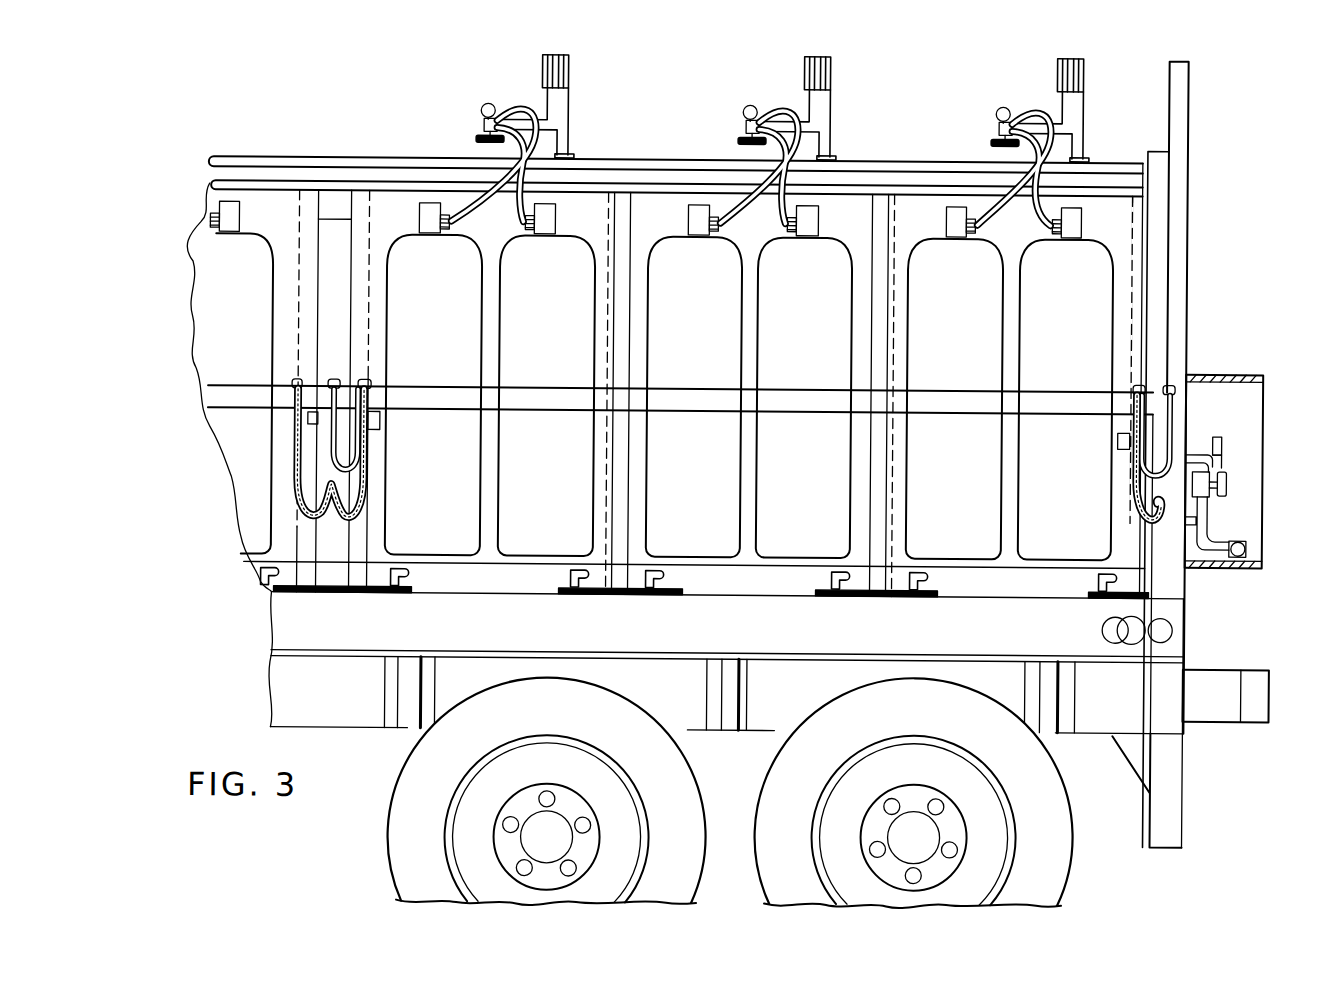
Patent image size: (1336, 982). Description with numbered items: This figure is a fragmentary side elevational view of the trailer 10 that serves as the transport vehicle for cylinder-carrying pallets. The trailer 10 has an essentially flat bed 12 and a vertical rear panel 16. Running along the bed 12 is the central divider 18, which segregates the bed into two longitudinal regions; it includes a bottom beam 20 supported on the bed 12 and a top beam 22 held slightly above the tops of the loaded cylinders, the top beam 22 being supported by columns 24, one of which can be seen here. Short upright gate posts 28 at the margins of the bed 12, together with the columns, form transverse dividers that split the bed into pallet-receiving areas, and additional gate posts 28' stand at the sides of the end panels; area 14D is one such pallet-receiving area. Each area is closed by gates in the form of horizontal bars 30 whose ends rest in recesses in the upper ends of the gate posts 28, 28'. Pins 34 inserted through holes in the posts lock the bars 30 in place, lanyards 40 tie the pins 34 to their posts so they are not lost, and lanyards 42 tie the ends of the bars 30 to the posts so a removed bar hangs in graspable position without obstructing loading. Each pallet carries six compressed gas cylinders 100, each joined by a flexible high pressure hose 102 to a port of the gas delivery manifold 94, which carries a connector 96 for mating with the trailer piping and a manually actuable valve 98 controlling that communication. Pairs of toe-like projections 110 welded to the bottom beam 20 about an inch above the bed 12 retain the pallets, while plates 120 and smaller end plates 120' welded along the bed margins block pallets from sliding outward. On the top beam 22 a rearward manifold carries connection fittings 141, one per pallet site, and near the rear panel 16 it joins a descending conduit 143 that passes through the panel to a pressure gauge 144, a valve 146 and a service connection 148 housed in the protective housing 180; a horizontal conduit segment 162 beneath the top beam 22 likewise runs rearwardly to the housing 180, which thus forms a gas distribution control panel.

The trailer 10 is at (1213, 133).
The bed 12 is at (280, 611).
The cylinder compartment 14D is at (926, 171).
The vertical rear panel 16 is at (1188, 218).
The central divider 18 is at (375, 152).
The bottom beam 20 is at (753, 578).
The top beam 22 is at (656, 176).
The column 24 is at (327, 231).
The gate post 28 is at (592, 393).
The gate post 28' is at (1189, 575).
The horizontal bar 30 is at (826, 408).
The pin 34 is at (379, 428).
The lanyard 40 is at (340, 452).
The lanyard 42 is at (297, 455).
The gas delivery manifold 94 is at (489, 106).
The connector 96 is at (481, 127).
The manually actuable valve 98 is at (476, 142).
The compressed gas cylinder 100 is at (649, 390).
The flexible high pressure hose 102 is at (516, 220).
The toe-like projection 110 is at (404, 576).
The plate 120 is at (605, 606).
The plate 120' is at (1094, 610).
The connection fitting 141 is at (573, 157).
The descending conduit 143 is at (1150, 272).
The pressure gauge 144 is at (1223, 440).
The valve 146 is at (1229, 479).
The service connection 148 is at (1248, 548).
The horizontal conduit segment 162 is at (556, 219).
The protective housing 180 is at (1266, 358).